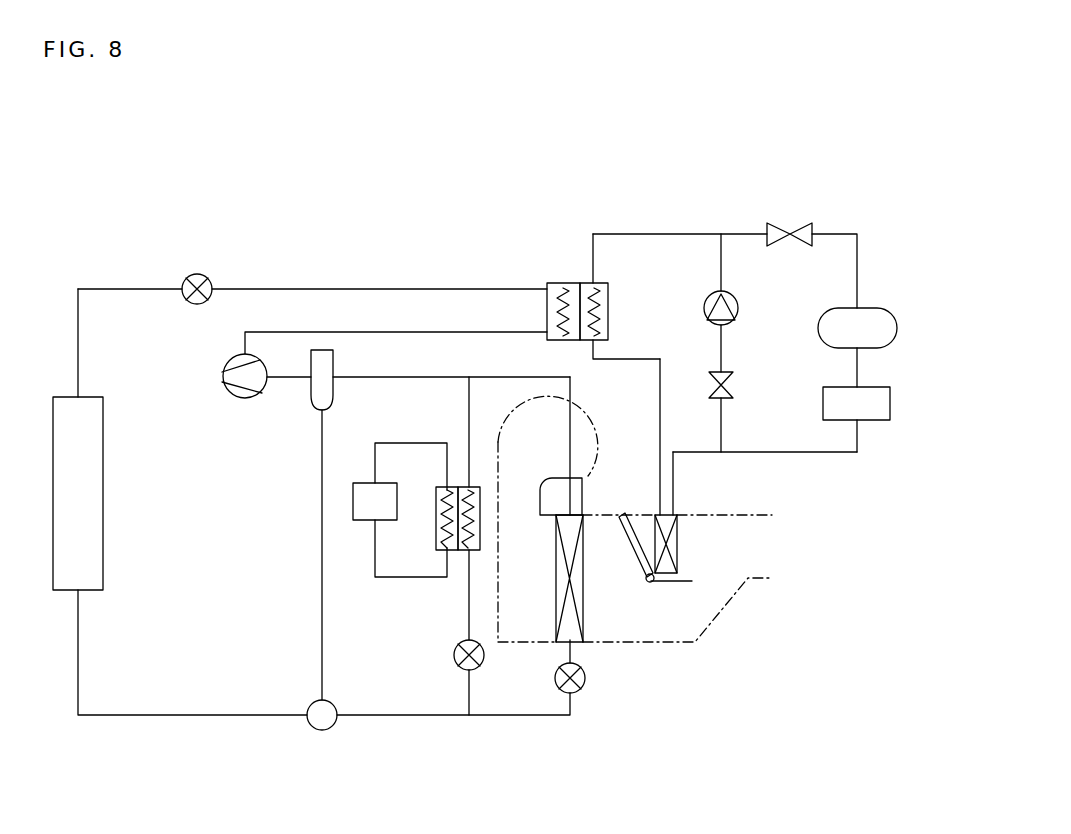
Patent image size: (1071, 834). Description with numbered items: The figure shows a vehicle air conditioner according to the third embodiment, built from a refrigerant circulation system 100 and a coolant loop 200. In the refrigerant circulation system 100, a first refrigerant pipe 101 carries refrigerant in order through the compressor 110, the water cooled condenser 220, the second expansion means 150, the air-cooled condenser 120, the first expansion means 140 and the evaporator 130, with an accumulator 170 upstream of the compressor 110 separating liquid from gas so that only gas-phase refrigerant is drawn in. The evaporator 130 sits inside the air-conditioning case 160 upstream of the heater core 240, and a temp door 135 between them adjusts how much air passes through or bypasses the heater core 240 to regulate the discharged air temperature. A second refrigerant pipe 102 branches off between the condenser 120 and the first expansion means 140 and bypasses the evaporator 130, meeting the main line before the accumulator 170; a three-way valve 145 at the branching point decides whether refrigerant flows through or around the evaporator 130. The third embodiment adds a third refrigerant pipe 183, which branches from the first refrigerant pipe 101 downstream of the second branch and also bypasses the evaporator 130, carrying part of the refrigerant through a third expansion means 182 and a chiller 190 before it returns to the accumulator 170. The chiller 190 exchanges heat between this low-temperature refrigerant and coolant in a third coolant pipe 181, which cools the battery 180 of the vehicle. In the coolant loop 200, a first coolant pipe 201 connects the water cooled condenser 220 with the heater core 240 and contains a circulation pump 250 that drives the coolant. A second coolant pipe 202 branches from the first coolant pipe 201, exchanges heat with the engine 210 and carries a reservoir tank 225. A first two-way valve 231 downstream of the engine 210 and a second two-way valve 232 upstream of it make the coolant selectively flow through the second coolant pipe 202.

The refrigerant circulation system 100 is at (305, 260).
The first refrigerant pipe 101 is at (225, 717).
The second refrigerant pipe 102 is at (320, 620).
The compressor 110 is at (243, 399).
The condenser 120 is at (103, 492).
The evaporator 130 is at (582, 644).
The temp door 135 is at (645, 535).
The first expansion means 140 is at (584, 694).
The three-way valve 145 is at (322, 730).
The second expansion means 150 is at (200, 272).
The air-conditioning case 160 is at (690, 645).
The accumulator 170 is at (333, 401).
The battery 180 is at (360, 522).
The third coolant pipe 181 is at (415, 579).
The third expansion means 182 is at (455, 662).
The third refrigerant pipe 183 is at (471, 692).
The chiller 190 is at (444, 486).
The coolant loop 200 is at (736, 212).
The first coolant pipe 201 is at (620, 234).
The second coolant pipe 202 is at (860, 365).
The engine 210 is at (897, 325).
The water cooled condenser 220 is at (568, 283).
The reservoir tank 225 is at (890, 400).
The first two-way valve 231 is at (795, 225).
The second two-way valve 232 is at (735, 388).
The heater core 240 is at (681, 532).
The circulation pump 250 is at (740, 306).